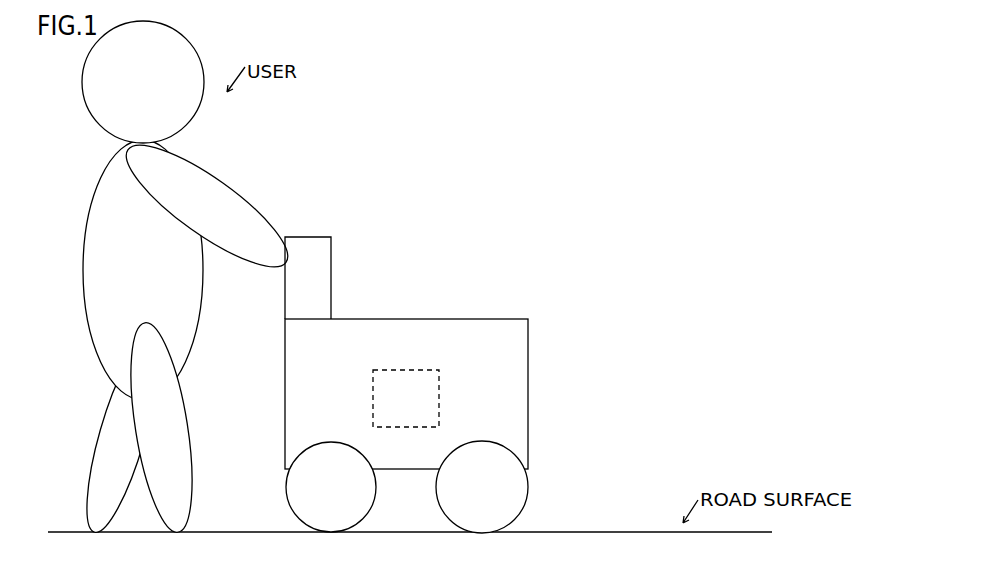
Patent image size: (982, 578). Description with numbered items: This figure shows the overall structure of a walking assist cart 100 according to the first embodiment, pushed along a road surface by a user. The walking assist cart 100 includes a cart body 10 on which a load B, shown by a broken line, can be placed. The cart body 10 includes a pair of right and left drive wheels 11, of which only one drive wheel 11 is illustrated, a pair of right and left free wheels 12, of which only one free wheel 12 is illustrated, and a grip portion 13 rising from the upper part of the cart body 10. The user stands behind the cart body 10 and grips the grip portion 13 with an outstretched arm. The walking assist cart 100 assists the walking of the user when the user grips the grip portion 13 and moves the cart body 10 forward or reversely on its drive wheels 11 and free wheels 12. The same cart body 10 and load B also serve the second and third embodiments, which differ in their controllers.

The walking assist cart 100 is at (495, 334).
The cart body 10 is at (514, 296).
The grip portion 13 is at (332, 253).
The drive wheel 11 is at (332, 441).
The free wheel 12 is at (483, 441).
The load B is at (423, 370).